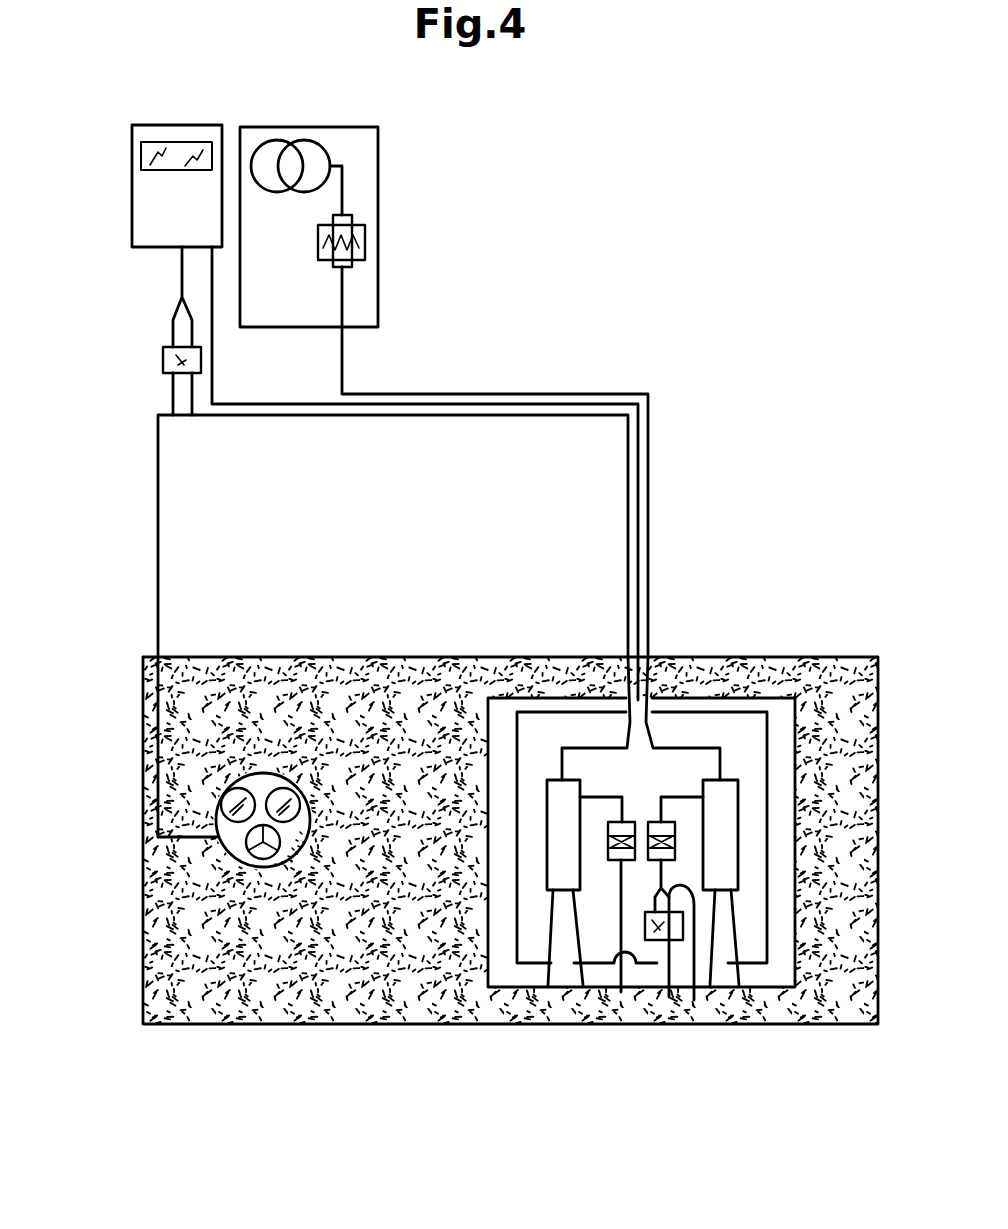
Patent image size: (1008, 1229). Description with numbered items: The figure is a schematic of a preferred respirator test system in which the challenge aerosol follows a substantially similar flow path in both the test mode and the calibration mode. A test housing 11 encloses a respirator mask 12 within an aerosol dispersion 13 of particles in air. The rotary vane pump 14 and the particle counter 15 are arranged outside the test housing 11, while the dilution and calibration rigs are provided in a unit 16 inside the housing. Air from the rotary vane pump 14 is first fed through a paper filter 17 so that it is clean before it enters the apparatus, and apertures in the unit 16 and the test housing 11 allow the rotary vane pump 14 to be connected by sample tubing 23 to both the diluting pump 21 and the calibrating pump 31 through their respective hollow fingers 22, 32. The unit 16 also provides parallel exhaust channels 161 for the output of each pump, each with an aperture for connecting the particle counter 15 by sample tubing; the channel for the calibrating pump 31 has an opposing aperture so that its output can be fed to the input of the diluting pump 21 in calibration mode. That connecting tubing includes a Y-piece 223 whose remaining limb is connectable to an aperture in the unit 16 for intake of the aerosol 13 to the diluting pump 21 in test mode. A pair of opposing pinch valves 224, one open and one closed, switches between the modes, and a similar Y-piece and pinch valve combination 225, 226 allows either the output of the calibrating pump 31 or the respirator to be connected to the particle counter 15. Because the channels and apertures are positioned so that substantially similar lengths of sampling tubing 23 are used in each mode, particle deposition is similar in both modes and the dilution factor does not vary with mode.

The test housing 11 is at (398, 1026).
The respirator mask 12 is at (238, 864).
The aerosol dispersion 13 is at (264, 1026).
The rotary vane pump 14 is at (323, 146).
The particle counter 15 is at (143, 200).
The unit 16 is at (786, 698).
The paper filter 17 is at (367, 234).
The diluting pump 21 is at (733, 780).
The hollow finger 22 is at (651, 820).
The sample tubing 23 is at (540, 394).
The calibrating pump 31 is at (547, 780).
The hollow finger 32 is at (632, 820).
The exhaust channel 161 is at (565, 977).
The Y-piece 223 is at (694, 1000).
The pinch valves 224 is at (650, 940).
The Y-piece 225 is at (173, 302).
The pinch valve 226 is at (163, 357).